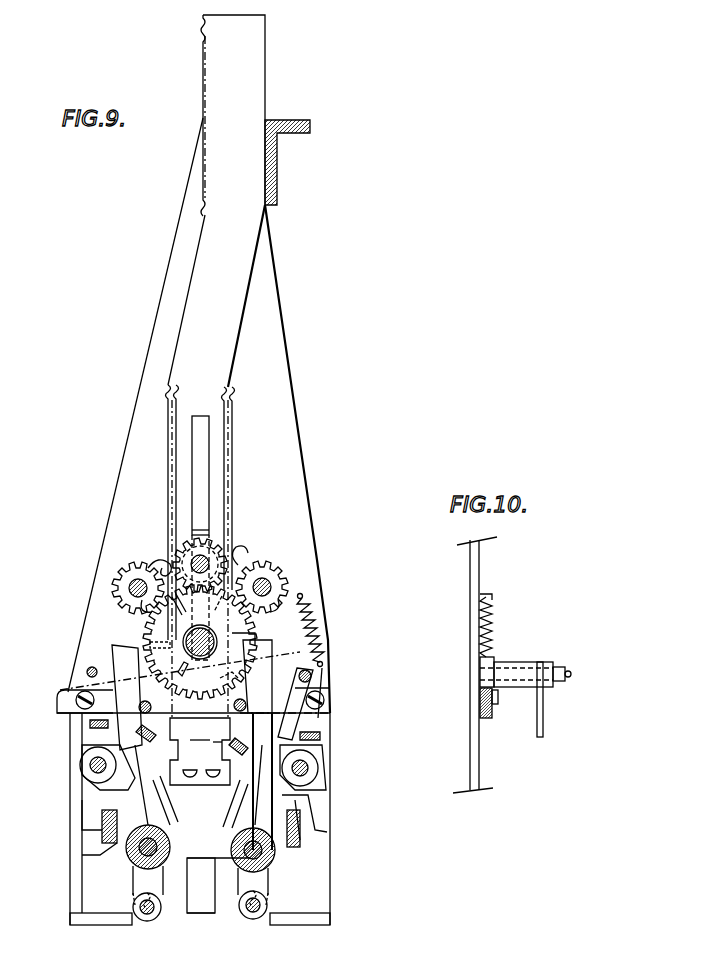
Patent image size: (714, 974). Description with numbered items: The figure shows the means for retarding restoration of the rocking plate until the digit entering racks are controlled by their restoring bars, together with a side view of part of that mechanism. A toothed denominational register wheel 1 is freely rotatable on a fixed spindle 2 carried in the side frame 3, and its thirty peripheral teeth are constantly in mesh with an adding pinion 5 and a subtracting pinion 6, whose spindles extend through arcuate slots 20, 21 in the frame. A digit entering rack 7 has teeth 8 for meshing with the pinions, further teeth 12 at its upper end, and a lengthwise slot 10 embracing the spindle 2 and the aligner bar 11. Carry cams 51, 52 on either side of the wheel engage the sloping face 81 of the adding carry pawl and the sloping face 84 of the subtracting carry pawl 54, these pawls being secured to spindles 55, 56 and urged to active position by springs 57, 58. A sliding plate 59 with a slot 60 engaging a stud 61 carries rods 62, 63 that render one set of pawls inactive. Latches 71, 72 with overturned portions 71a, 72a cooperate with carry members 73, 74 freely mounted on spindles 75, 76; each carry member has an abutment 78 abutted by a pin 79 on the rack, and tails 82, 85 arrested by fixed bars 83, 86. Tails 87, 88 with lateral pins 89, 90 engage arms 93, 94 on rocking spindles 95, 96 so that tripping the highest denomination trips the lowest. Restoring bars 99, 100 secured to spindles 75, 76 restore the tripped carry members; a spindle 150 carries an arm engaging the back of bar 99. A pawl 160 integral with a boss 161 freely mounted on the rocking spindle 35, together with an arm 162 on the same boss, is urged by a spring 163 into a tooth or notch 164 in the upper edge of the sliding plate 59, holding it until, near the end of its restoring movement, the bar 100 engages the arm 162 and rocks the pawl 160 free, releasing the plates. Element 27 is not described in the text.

In FIG. 9, the denominational register wheel 1 is at (150, 625).
In FIG. 9, the fixed spindle 2 is at (200, 642).
In FIG. 9, the side frame 3 is at (300, 480).
In FIG. 10, the side frame 3 is at (470, 571).
In FIG. 9, the adding pinion 5 is at (126, 578).
In FIG. 9, the subtracting pinion 6 is at (274, 570).
In FIG. 9, the digit entering rack 7 is at (233, 400).
In FIG. 9, the rack teeth 8 is at (168, 400).
In FIG. 9, the slot 10 is at (200, 430).
In FIG. 9, the aligner bar 11 is at (205, 560).
In FIG. 9, the rack teeth 12 is at (213, 78).
In FIG. 9, the arcuate slot 20 is at (160, 560).
In FIG. 9, the arcuate slot 21 is at (244, 566).
In FIG. 9, the block 27 is at (201, 900).
In FIG. 9, the rocking spindle 35 is at (320, 672).
In FIG. 10, the rocking spindle 35 is at (568, 678).
In FIG. 9, the carry cam 51 is at (220, 680).
In FIG. 9, the carry cam 52 is at (180, 674).
In FIG. 9, the subtracting carry pawl 54 is at (310, 628).
In FIG. 9, the spindle 55 is at (135, 880).
In FIG. 9, the spindle 56 is at (262, 878).
In FIG. 9, the spring 57 is at (150, 721).
In FIG. 9, the spring 58 is at (213, 744).
In FIG. 9, the sliding plate 59 is at (300, 718).
In FIG. 10, the sliding plate 59 is at (490, 716).
In FIG. 9, the slot 60 is at (68, 698).
In FIG. 9, the stud 61 is at (326, 698).
In FIG. 10, the stud 61 is at (492, 702).
In FIG. 9, the rod 62 is at (130, 715).
In FIG. 9, the rod 63 is at (242, 736).
In FIG. 9, the latch 71 is at (150, 821).
In FIG. 9, the overturned portion 71a is at (163, 785).
In FIG. 9, the latch 72 is at (264, 823).
In FIG. 9, the overturned portion 72a is at (236, 786).
In FIG. 9, the carry member 73 is at (164, 842).
In FIG. 9, the carry member 74 is at (224, 847).
In FIG. 9, the spindle 75 is at (96, 775).
In FIG. 9, the spindle 76 is at (320, 776).
In FIG. 9, the abutment 78 is at (200, 751).
In FIG. 9, the pin 79 is at (190, 778).
In FIG. 9, the sloping face 81 is at (136, 652).
In FIG. 9, the tail 82 is at (100, 822).
In FIG. 9, the fixed bar 83 is at (110, 850).
In FIG. 9, the sloping face 84 is at (249, 745).
In FIG. 9, the tail 85 is at (322, 820).
In FIG. 9, the fixed bar 86 is at (294, 848).
In FIG. 9, the tail 87 is at (218, 885).
In FIG. 9, the tail 88 is at (201, 848).
In FIG. 9, the lateral pin 89 is at (130, 896).
In FIG. 9, the lateral pin 90 is at (268, 898).
In FIG. 9, the arm 93 is at (160, 905).
In FIG. 9, the arm 94 is at (244, 915).
In FIG. 9, the rocking spindle 95 is at (140, 918).
In FIG. 9, the rocking spindle 96 is at (258, 918).
In FIG. 9, the restoring bar 99 is at (80, 764).
In FIG. 9, the restoring bar 100 is at (320, 762).
In FIG. 9, the spindle 150 is at (90, 670).
In FIG. 9, the pawl 160 is at (304, 670).
In FIG. 10, the pawl 160 is at (492, 662).
In FIG. 10, the boss 161 is at (525, 662).
In FIG. 9, the arm 162 is at (300, 736).
In FIG. 10, the arm 162 is at (543, 726).
In FIG. 9, the spring 163 is at (320, 660).
In FIG. 10, the spring 163 is at (490, 626).
In FIG. 9, the tooth or notch 164 is at (210, 728).